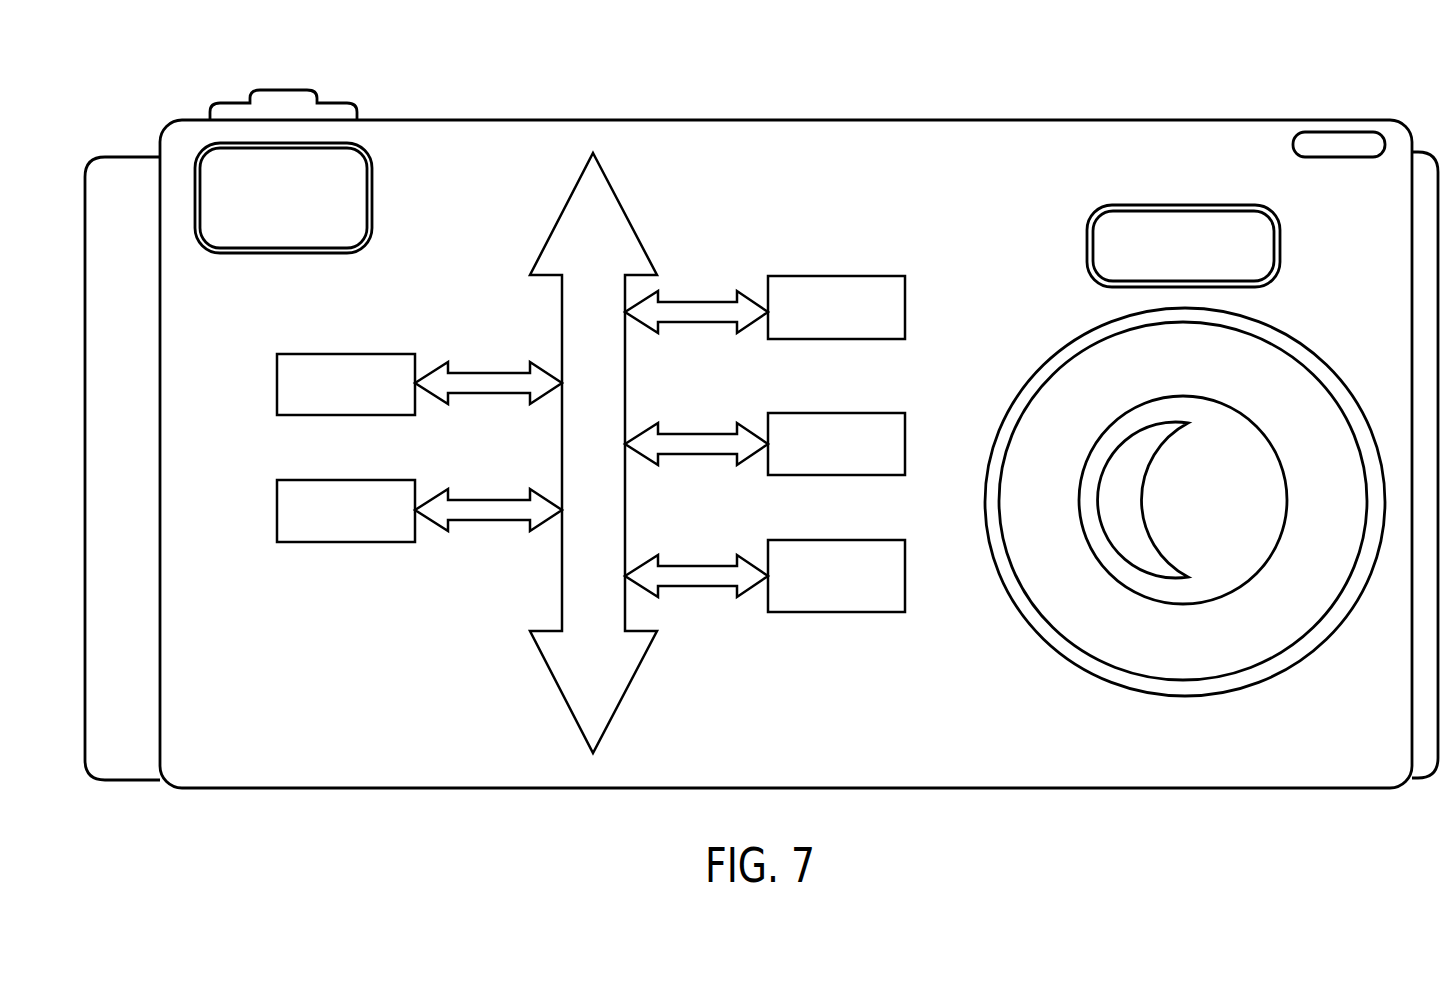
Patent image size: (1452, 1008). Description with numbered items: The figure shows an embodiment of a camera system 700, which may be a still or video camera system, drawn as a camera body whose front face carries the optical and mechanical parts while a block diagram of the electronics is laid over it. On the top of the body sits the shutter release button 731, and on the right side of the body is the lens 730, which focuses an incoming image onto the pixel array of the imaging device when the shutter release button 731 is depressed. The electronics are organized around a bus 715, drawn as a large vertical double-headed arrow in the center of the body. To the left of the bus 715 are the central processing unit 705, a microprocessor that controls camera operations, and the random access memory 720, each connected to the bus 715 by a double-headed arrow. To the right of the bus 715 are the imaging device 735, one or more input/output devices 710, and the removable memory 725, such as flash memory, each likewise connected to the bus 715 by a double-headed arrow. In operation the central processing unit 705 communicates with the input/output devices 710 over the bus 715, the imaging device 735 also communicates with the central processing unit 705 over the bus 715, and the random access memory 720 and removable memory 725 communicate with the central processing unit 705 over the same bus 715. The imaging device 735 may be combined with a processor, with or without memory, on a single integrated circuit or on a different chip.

The camera system 700 is at (1222, 75).
The central processing unit 705 is at (277, 388).
The input/output device 710 is at (905, 445).
The bus 715 is at (565, 700).
The random access memory 720 is at (277, 517).
The removable memory 725 is at (905, 578).
The lens 730 is at (1275, 333).
The shutter release button 731 is at (285, 90).
The imaging device 735 is at (905, 310).